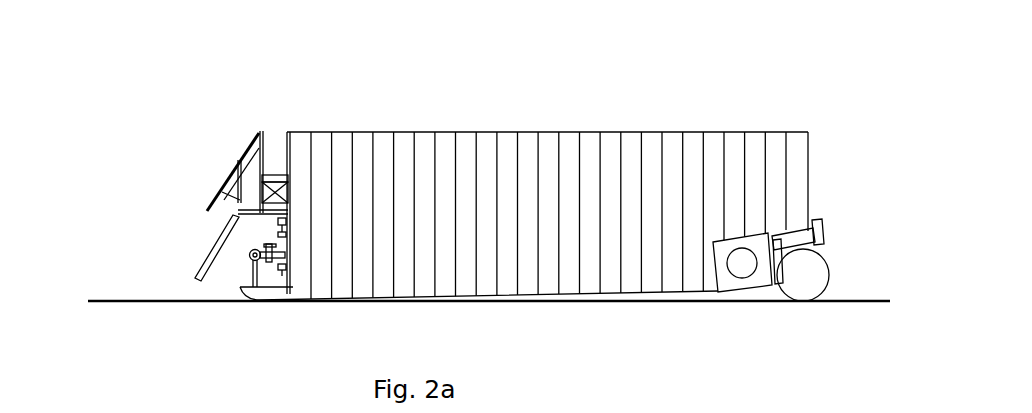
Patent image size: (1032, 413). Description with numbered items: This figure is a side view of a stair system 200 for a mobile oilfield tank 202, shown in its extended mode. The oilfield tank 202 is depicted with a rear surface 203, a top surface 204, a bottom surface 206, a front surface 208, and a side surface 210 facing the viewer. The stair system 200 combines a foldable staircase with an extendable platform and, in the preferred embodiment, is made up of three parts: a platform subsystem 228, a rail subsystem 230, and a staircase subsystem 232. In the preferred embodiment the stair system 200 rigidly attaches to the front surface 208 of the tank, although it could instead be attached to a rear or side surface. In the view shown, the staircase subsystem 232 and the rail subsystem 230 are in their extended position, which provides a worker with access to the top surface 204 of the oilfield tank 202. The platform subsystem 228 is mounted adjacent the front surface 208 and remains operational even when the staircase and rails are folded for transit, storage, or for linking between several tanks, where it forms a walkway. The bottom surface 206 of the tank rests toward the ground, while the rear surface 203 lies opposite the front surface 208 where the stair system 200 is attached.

The stair system 200 is at (471, 201).
The oilfield tank 202 is at (574, 170).
The rear surface 203 is at (808, 178).
The top surface 204 is at (562, 130).
The bottom surface 206 is at (488, 293).
The front surface 208 is at (297, 275).
The side surface 210 is at (574, 199).
The platform subsystem 228 is at (280, 165).
The rail subsystem 230 is at (266, 176).
The staircase subsystem 232 is at (203, 238).